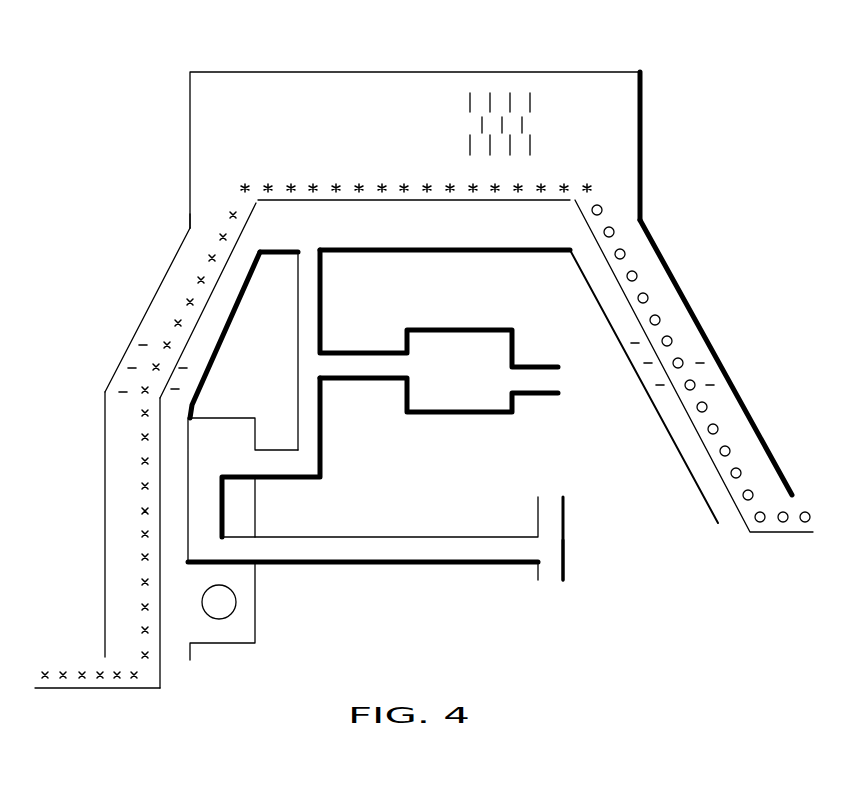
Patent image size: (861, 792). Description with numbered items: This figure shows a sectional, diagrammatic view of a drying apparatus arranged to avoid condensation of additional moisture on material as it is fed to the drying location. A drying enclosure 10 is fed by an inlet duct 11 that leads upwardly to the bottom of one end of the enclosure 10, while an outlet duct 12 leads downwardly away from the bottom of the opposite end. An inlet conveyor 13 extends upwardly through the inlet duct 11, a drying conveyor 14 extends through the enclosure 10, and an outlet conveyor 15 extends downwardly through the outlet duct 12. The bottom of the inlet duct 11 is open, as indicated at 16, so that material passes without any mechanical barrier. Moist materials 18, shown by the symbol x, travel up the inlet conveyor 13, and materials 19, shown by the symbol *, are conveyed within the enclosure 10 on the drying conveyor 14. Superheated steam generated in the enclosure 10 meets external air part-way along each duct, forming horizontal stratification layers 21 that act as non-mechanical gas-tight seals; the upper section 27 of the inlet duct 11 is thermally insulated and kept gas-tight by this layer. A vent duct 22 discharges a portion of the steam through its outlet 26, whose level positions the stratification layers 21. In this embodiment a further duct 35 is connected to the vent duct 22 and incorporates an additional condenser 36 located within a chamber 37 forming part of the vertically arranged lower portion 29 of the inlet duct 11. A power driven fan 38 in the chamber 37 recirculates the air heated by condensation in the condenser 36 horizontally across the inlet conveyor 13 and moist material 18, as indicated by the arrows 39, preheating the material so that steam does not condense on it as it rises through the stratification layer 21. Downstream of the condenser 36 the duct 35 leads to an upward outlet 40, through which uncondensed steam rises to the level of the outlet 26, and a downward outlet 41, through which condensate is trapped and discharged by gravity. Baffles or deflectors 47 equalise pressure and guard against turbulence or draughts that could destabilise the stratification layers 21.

The drying enclosure 10 is at (350, 72).
The inlet duct 11 is at (255, 258).
The outlet duct 12 is at (677, 282).
The inlet conveyor 13 is at (205, 307).
The drying conveyor 14 is at (543, 200).
The outlet conveyor 15 is at (637, 314).
The open bottom of inlet duct 16 is at (173, 657).
The moist materials 18 is at (45, 689).
The materials being dried 19 is at (358, 188).
The stratification layer 21 is at (172, 392).
The vent duct 22 is at (322, 315).
The outlet from vent duct 26 is at (558, 382).
The upper section of inlet duct 27 is at (175, 253).
The lower section of inlet duct 29 is at (105, 636).
The further duct 35 is at (323, 455).
The additional condenser 36 is at (226, 508).
The chamber 37 is at (223, 414).
The power driven fan 38 is at (237, 597).
The arrows 39 is at (158, 471).
The upward outlet 40 is at (550, 503).
The downward outlet 41 is at (548, 570).
The baffles and/or deflectors 47 is at (222, 223).